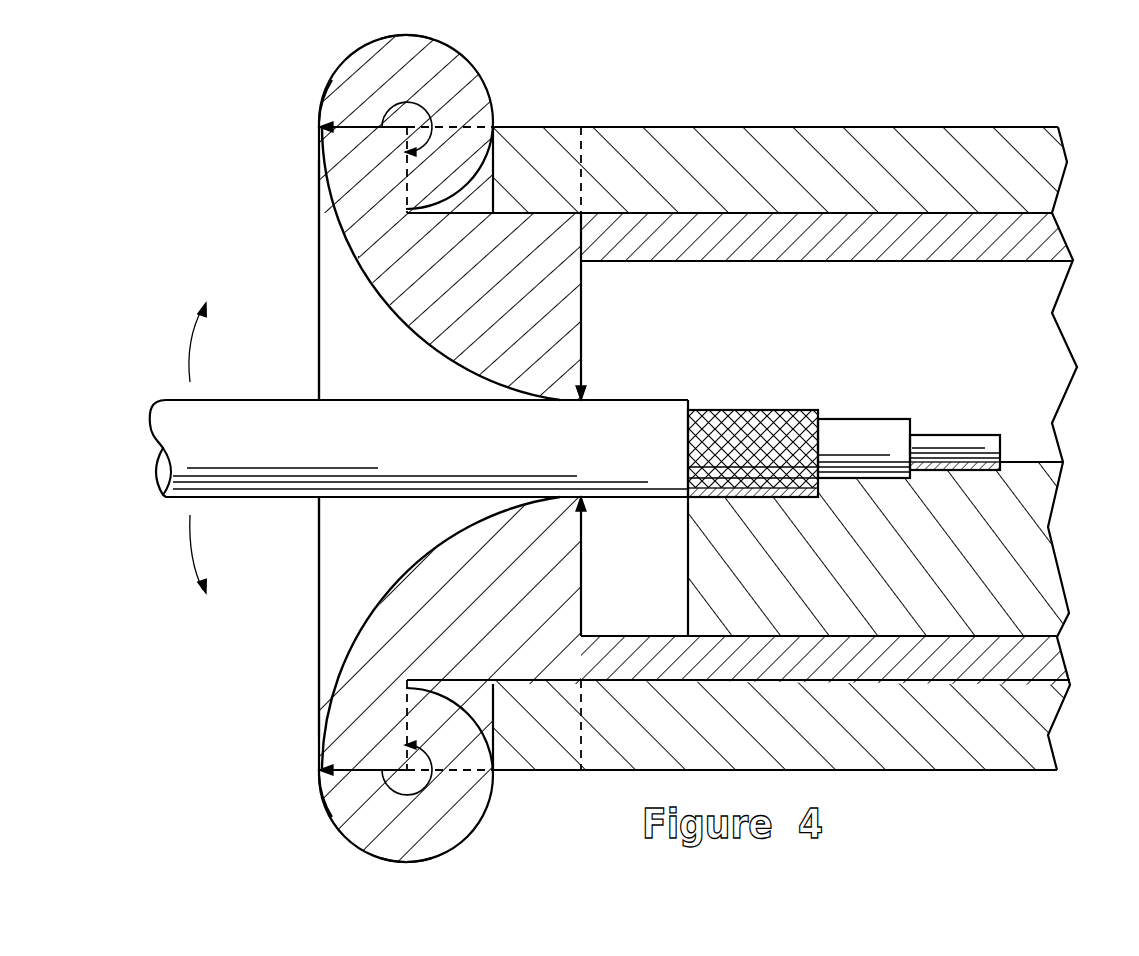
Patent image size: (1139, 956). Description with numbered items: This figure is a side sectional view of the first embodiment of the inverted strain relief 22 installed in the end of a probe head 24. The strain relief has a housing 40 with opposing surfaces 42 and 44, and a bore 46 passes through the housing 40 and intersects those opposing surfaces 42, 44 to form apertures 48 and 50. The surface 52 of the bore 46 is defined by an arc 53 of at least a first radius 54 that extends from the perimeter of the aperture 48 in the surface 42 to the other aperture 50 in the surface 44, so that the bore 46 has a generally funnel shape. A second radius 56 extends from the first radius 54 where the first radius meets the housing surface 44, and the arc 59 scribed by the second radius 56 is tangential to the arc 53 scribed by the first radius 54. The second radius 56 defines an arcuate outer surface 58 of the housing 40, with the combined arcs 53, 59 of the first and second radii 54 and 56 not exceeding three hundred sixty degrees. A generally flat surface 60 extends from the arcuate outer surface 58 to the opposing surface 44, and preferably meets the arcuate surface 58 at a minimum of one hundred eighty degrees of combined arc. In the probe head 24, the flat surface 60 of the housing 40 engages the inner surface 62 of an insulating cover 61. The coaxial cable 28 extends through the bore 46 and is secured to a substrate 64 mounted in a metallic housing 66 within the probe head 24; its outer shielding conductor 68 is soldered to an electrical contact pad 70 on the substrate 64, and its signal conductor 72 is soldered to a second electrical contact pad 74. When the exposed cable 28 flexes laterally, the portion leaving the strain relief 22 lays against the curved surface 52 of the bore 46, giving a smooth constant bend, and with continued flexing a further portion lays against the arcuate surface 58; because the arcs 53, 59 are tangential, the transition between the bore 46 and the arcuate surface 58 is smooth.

The inverted strain relief 22 is at (275, 95).
The probe head 24 is at (962, 126).
The coaxial cable 28 is at (221, 498).
The housing 40 is at (318, 243).
The opposing surface 42 is at (584, 330).
The opposing surface 44 is at (318, 743).
The bore 46 is at (343, 585).
The aperture 48 is at (594, 398).
The aperture 50 is at (318, 144).
The surface of the bore 52 is at (345, 378).
The arc 53 is at (415, 346).
The first radius 54 is at (543, 132).
The second radius 56 is at (343, 118).
The arcuate outer surface 58 is at (483, 52).
The arc 59 is at (412, 36).
The flat surface 60 is at (525, 213).
The insulating cover 61 is at (1053, 171).
The inner surface 62 is at (614, 215).
The substrate 64 is at (1050, 578).
The metallic housing 66 is at (1053, 240).
The outer shielding conductor 68 is at (754, 408).
The electrical contact pad 70 is at (770, 498).
The signal conductor 72 is at (962, 433).
The second electrical contact pad 74 is at (938, 472).